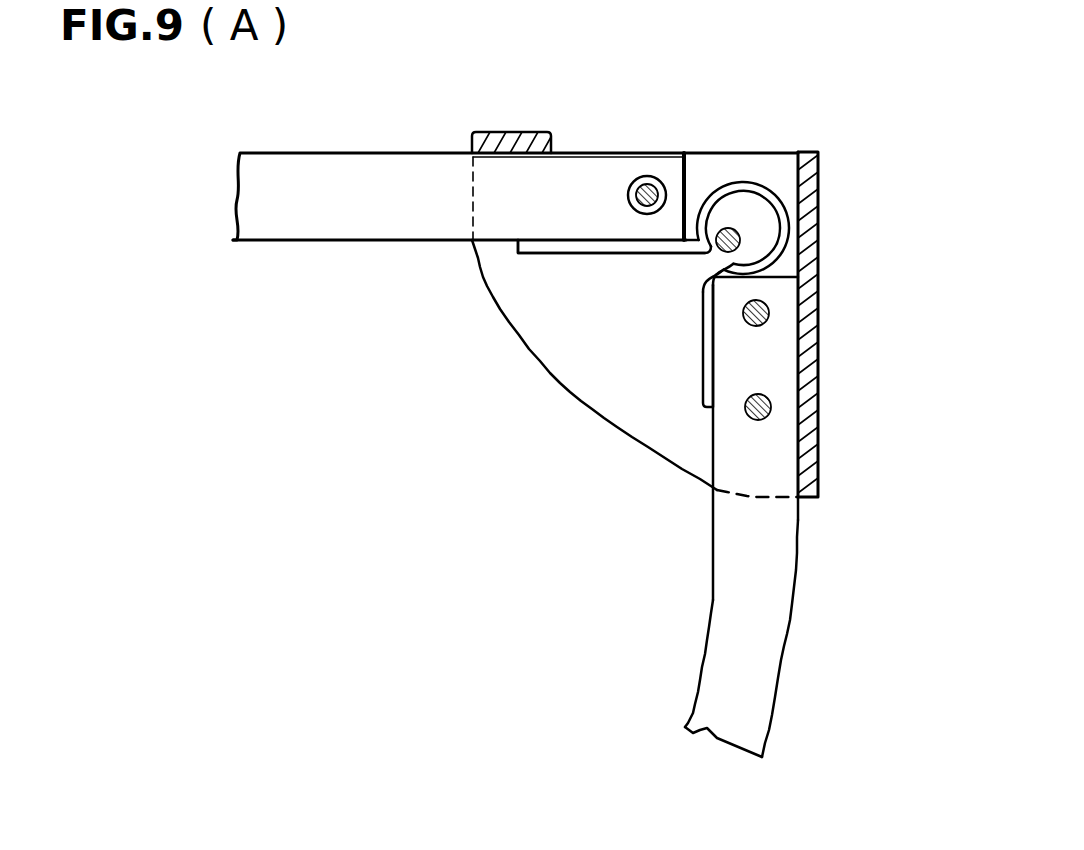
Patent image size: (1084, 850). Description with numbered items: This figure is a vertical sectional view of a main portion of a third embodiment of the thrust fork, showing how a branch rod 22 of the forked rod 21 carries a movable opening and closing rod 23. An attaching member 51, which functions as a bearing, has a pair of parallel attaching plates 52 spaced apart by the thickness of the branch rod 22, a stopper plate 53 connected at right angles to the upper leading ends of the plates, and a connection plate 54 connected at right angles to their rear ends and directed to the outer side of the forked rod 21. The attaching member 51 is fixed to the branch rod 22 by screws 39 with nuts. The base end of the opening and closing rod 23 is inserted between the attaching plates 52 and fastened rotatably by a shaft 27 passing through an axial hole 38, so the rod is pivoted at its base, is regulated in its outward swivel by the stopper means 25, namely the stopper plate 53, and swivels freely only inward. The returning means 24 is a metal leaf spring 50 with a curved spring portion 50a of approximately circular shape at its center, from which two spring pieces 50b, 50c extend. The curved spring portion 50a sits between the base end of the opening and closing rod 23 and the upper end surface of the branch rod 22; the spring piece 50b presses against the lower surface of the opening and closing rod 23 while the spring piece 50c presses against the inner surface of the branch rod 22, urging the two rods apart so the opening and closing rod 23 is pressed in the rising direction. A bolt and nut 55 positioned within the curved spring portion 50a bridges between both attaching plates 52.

The forked rod 21 is at (737, 560).
The branch rod 22 is at (713, 635).
The opening and closing rod 23 is at (318, 234).
The returning means 24 is at (713, 177).
The stopper means 25 is at (535, 118).
The shaft 27 is at (658, 177).
The axial hole 38 is at (640, 208).
The screw 39 is at (770, 317).
The leaf spring 50 is at (762, 182).
The curved spring portion 50a is at (777, 200).
The spring piece 50b is at (605, 255).
The spring piece 50c is at (703, 355).
The attaching member 51 is at (833, 147).
The attaching plate 52 is at (557, 367).
The stopper plate 53 is at (497, 128).
The connection plate 54 is at (822, 310).
The bolt and nut 55 is at (742, 240).